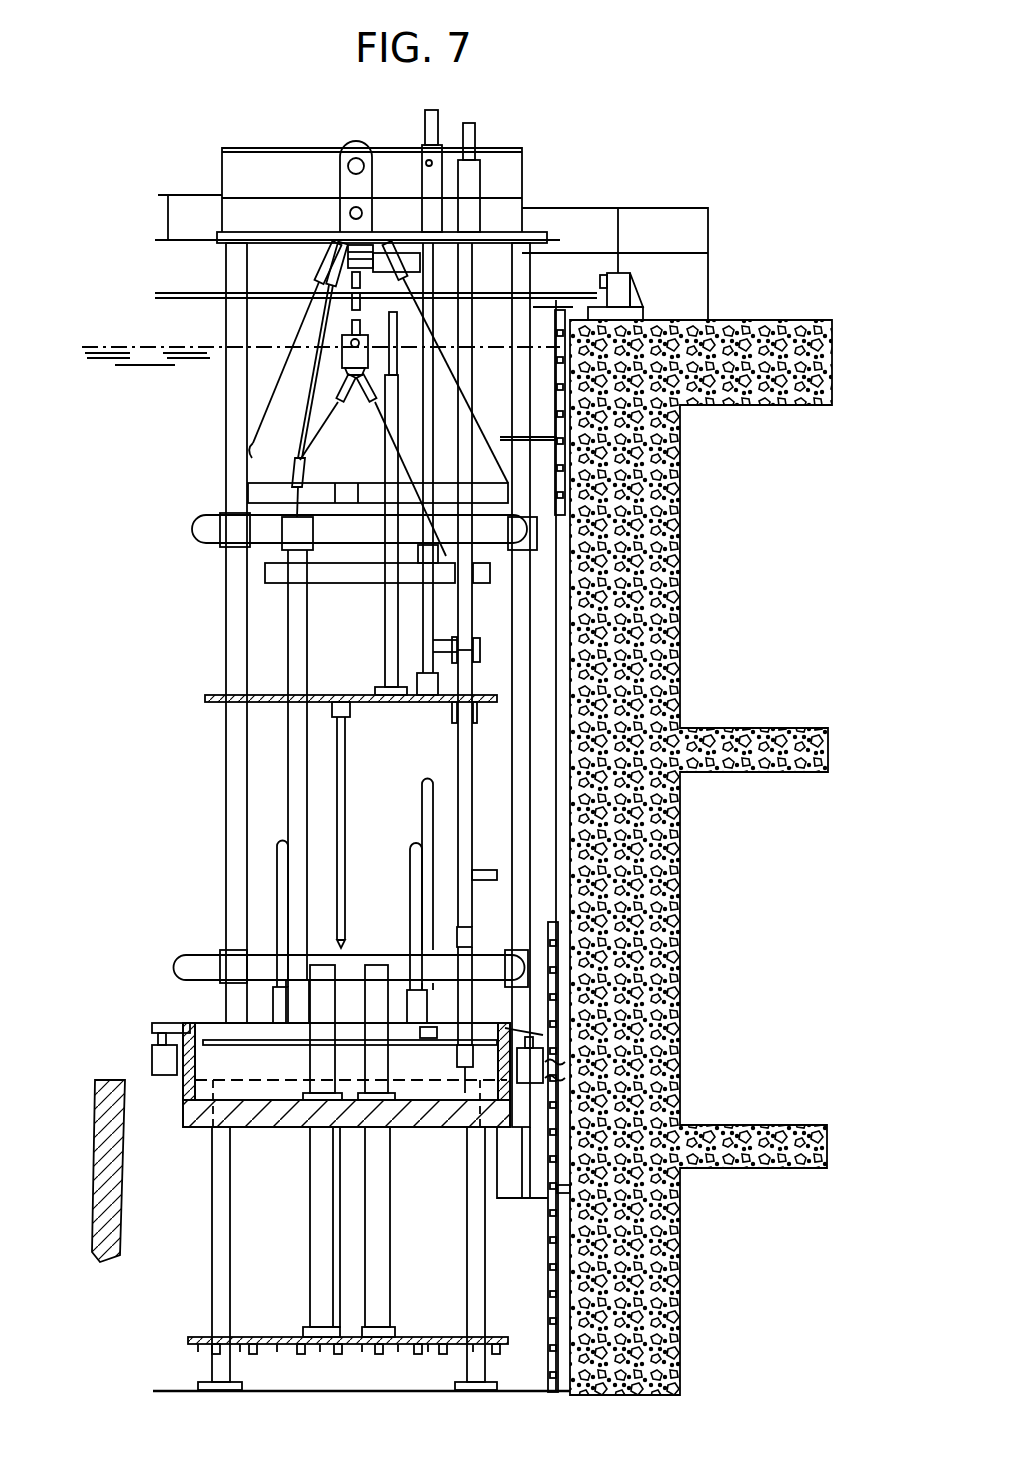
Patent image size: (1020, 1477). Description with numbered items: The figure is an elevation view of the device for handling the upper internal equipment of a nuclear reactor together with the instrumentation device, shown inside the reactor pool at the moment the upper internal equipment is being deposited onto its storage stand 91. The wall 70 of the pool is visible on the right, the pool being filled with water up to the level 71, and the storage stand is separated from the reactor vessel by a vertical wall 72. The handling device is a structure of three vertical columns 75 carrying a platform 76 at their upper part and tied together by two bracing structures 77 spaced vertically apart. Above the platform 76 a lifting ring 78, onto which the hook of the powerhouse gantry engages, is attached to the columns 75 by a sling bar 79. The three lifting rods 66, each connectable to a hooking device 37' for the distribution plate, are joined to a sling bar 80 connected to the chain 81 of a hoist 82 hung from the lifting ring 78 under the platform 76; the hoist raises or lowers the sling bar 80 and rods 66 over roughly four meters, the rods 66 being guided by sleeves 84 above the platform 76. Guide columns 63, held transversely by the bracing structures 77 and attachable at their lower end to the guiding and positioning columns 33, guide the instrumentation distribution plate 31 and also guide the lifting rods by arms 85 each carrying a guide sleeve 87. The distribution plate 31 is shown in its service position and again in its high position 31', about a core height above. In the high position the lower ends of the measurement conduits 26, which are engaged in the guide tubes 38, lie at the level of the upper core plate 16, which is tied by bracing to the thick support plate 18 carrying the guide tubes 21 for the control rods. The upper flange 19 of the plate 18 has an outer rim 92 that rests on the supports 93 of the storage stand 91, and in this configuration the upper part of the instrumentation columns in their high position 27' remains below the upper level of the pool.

The wall of the reactor pool 70 is at (683, 997).
The lifting ring 78 is at (347, 172).
The sleeves 84 is at (435, 178).
The lifting rods 66 is at (430, 122).
The guide columns 63 is at (470, 133).
The guiding and positioning columns 33 is at (462, 1078).
The platform 76 is at (236, 233).
The hoist 82 is at (400, 258).
The vertical columns 75 is at (295, 262).
The water level 71 is at (128, 344).
The chain 81 is at (360, 323).
The sling bar 79 is at (270, 383).
The high position of the instrumentation columns 27' is at (378, 469).
The bracing structures 77 is at (203, 530).
The sling bar 80 is at (420, 585).
The arms 85 is at (440, 643).
The guide sleeve 87 is at (477, 645).
The measurement conduits 26 is at (385, 638).
The high position of the distribution plate 31' is at (387, 693).
The hooking device 37' is at (406, 717).
The guide tubes 38 is at (338, 802).
The upper flange 19 is at (180, 1023).
The support plate 18 is at (408, 1115).
The instrumentation distribution plate 31 is at (336, 1013).
The outer rim 92 is at (152, 1030).
The supports 93 is at (152, 1053).
The vertical wall 72 is at (97, 1090).
The guide tubes 21 is at (333, 1227).
The storage stand 91 is at (222, 1222).
The upper core plate 16 is at (427, 1336).